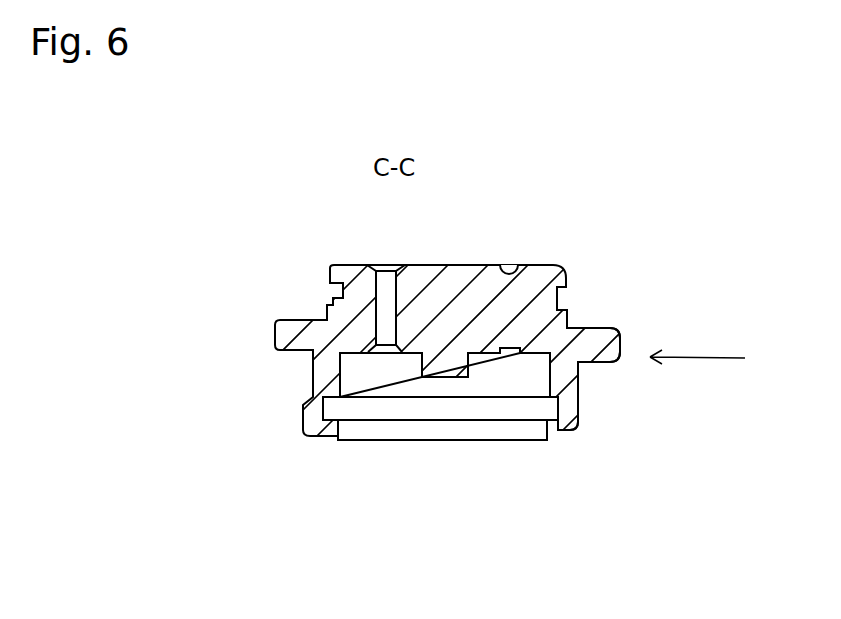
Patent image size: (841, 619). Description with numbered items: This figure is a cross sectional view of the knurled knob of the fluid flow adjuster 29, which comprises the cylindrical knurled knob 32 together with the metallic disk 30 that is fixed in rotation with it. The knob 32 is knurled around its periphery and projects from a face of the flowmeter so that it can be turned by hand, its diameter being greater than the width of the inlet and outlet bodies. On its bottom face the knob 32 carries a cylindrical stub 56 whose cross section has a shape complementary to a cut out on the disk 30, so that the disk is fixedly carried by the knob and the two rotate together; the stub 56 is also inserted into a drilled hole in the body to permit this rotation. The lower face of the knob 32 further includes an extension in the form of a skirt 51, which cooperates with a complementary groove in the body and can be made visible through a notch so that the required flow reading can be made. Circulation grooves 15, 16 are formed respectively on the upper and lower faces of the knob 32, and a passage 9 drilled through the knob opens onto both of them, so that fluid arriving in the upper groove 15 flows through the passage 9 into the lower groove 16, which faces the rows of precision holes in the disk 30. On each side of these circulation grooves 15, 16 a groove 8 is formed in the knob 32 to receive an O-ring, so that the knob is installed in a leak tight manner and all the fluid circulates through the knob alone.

The groove 8 is at (320, 403).
The passage 9 is at (385, 300).
The circulation groove 15 is at (510, 270).
The circulation groove 16 is at (503, 357).
The fluid flow adjuster 29 is at (716, 366).
The metallic disk 30 is at (511, 350).
The knurled knob 32 is at (615, 329).
The skirt 51 is at (563, 432).
The cylindrical stub 56 is at (442, 373).